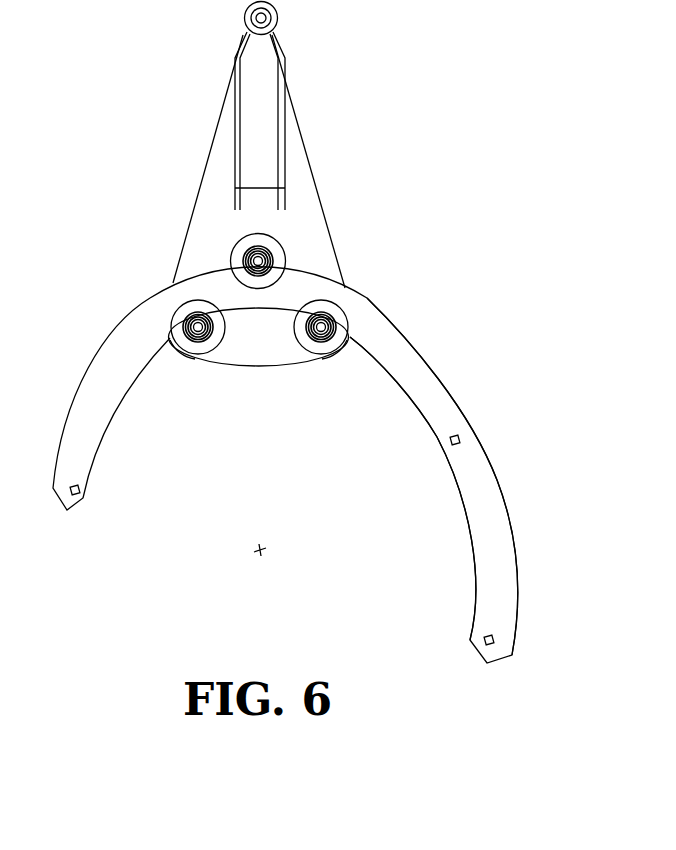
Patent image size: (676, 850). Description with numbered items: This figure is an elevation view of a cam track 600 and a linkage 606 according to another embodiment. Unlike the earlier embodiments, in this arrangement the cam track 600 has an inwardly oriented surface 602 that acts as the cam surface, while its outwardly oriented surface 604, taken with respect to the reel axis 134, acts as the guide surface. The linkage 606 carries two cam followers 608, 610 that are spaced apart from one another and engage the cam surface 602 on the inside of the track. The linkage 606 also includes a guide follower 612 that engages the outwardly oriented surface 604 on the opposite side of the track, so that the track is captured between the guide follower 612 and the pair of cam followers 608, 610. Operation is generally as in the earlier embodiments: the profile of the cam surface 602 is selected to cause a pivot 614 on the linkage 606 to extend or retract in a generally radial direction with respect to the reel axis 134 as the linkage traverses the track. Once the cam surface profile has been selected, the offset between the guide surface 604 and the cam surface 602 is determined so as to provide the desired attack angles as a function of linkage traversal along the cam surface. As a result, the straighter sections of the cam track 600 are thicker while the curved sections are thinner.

The reel axis 134 is at (235, 568).
The cam track 600 is at (523, 460).
The inwardly oriented surface 602 is at (425, 417).
The outwardly oriented surface 604 is at (500, 368).
The linkage 606 is at (352, 204).
The cam follower 608 is at (200, 383).
The cam follower 610 is at (315, 383).
The guide follower 612 is at (232, 258).
The pivot 614 is at (252, 15).